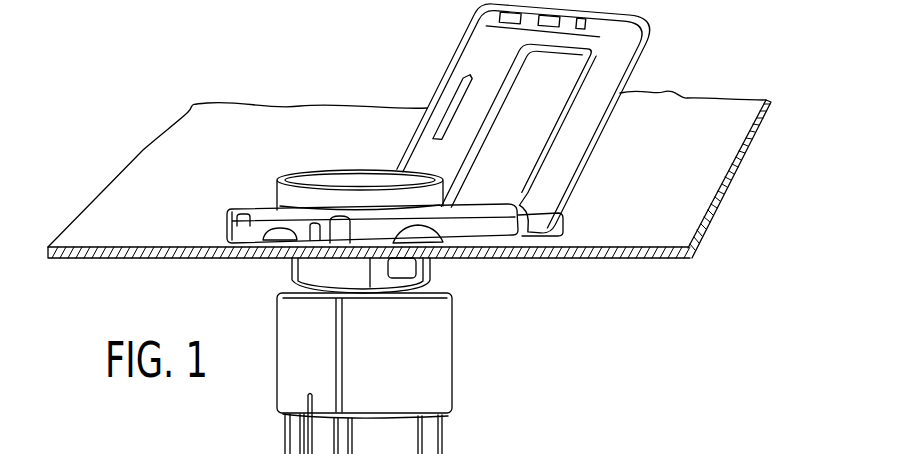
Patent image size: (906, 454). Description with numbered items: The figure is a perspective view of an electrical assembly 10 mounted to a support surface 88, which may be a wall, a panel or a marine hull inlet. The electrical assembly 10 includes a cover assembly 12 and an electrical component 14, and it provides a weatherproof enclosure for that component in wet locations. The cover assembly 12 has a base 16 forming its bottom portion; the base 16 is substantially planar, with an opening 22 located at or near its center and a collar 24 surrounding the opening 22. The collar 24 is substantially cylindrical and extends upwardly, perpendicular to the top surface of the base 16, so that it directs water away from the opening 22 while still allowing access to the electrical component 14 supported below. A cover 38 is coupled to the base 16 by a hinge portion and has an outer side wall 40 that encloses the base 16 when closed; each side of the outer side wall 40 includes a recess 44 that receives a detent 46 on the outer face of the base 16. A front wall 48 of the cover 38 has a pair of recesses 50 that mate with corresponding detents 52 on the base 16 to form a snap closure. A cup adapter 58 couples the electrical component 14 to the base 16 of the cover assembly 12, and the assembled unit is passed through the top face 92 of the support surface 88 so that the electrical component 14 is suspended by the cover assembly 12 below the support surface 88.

The electrical assembly 10 is at (559, 356).
The cover assembly 12 is at (566, 120).
The electrical component 14 is at (455, 372).
The base 16 is at (353, 194).
The opening 22 is at (353, 168).
The collar 24 is at (277, 184).
The cover 38 is at (612, 140).
The outer side wall 40 is at (606, 111).
The recess 44 is at (453, 106).
The detent 46 is at (263, 238).
The front wall 48 is at (488, 424).
The recesses 50 is at (542, 20).
The detent 52 is at (226, 235).
The cup adapter 58 is at (433, 277).
The support surface 88 is at (412, 154).
The top face 92 is at (722, 110).